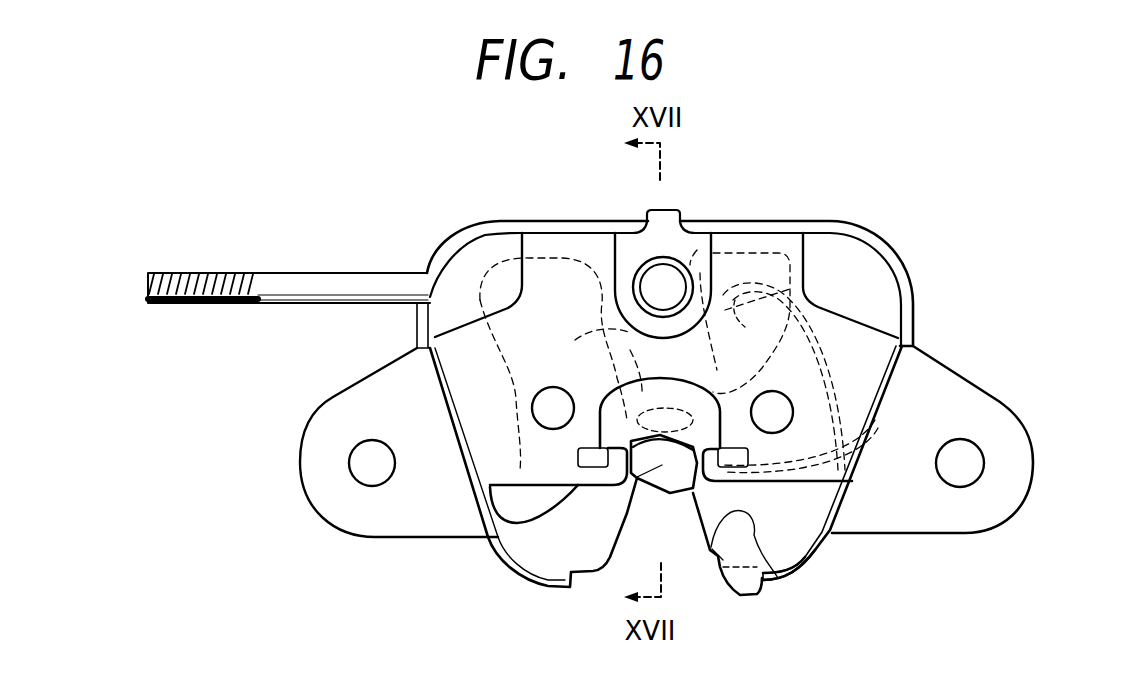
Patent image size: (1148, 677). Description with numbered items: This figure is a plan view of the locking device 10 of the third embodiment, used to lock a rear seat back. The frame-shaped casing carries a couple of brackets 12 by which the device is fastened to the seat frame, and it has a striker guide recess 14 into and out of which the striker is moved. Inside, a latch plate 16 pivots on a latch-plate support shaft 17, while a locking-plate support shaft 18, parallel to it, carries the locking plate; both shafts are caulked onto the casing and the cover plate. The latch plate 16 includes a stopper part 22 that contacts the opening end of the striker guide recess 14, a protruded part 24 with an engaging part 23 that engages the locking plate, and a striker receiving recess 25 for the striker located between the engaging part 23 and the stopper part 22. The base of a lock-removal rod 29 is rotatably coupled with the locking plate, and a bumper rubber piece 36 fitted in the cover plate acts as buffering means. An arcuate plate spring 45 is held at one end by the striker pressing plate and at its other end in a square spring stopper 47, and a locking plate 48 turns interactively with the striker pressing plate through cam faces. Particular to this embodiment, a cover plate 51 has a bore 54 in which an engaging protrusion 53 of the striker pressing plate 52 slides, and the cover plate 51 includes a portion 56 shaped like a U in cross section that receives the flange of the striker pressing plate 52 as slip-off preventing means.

The latch device 10 is at (916, 252).
The brackets 12 is at (327, 490).
The striker guide recess 14 is at (615, 570).
The latch plate 16 is at (800, 533).
The latch-plate support shaft 17 is at (778, 413).
The locking-plate support shaft 18 is at (547, 407).
The stopper part 22 is at (743, 588).
The engaging part 23 is at (687, 507).
The protruded part 24 is at (635, 475).
The striker receiving recess 25 is at (795, 565).
The lock-removal rod 29 is at (350, 280).
The bumper rubber piece 36 is at (643, 417).
The arcuate plate spring 45 is at (845, 470).
The square spring stopper 47 is at (706, 505).
The locking plate 48 is at (507, 507).
The cover plate 51 is at (841, 262).
The striker pressing plate 52 is at (737, 335).
The engaging protrusion 53 is at (655, 276).
The bore 54 is at (648, 262).
The U-shaped portion 56 is at (665, 213).